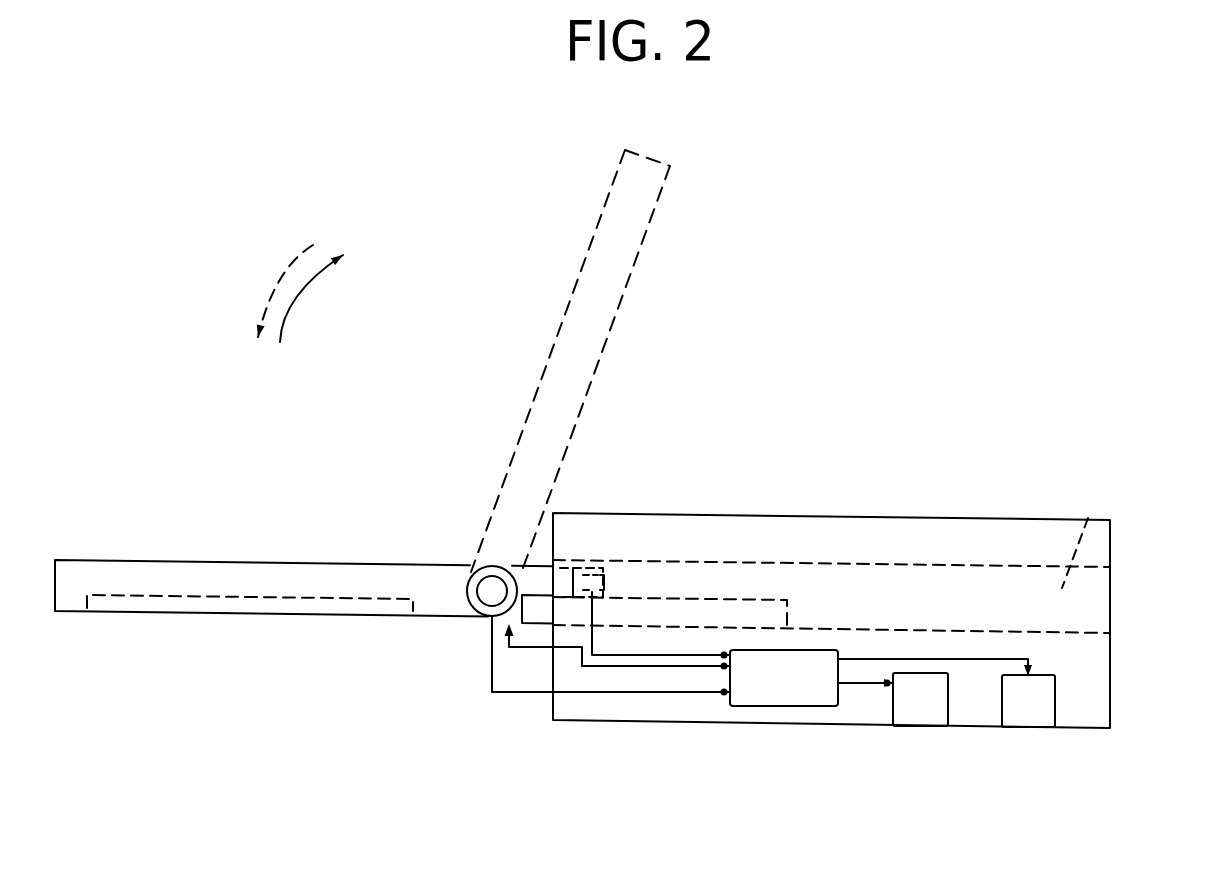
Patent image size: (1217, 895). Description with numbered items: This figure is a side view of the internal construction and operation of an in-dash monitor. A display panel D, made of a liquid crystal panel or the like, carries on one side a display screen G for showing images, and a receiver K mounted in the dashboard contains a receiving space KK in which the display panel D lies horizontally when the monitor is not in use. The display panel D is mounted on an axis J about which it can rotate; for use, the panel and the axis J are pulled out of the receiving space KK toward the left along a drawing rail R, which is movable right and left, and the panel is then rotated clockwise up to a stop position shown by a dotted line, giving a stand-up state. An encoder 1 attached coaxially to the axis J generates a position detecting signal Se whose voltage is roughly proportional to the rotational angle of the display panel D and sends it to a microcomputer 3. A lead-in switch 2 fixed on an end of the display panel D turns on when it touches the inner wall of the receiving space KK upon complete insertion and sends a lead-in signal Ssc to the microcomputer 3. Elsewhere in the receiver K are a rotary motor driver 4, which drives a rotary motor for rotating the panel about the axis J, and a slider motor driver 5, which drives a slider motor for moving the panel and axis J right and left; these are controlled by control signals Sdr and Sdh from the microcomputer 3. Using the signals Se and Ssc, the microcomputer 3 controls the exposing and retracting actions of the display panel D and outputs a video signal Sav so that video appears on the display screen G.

The display panel D is at (152, 570).
The display screen G is at (213, 608).
The axis J is at (467, 598).
The encoder 1 is at (467, 578).
The lead-in switch 2 is at (605, 582).
The drawing rail R is at (788, 612).
The receiver K is at (937, 515).
The receiving space KK is at (1090, 532).
The microcomputer 3 is at (787, 703).
The rotary motor driver 4 is at (915, 718).
The slider motor driver 5 is at (1018, 717).
The position detecting signal Se is at (505, 692).
The video signal Sav is at (620, 667).
The lead-in signal Ssc is at (707, 656).
The control signal Sdr is at (862, 685).
The control signal Sdh is at (1007, 657).